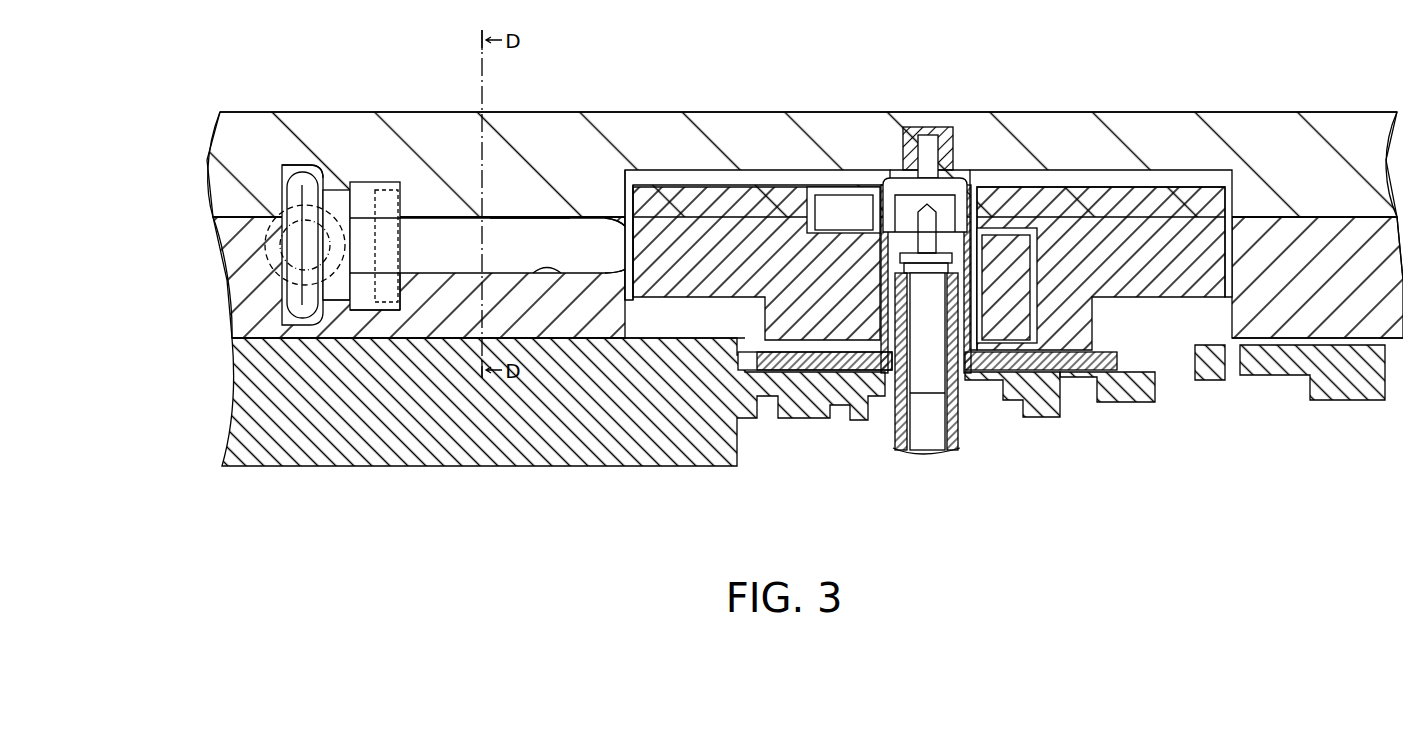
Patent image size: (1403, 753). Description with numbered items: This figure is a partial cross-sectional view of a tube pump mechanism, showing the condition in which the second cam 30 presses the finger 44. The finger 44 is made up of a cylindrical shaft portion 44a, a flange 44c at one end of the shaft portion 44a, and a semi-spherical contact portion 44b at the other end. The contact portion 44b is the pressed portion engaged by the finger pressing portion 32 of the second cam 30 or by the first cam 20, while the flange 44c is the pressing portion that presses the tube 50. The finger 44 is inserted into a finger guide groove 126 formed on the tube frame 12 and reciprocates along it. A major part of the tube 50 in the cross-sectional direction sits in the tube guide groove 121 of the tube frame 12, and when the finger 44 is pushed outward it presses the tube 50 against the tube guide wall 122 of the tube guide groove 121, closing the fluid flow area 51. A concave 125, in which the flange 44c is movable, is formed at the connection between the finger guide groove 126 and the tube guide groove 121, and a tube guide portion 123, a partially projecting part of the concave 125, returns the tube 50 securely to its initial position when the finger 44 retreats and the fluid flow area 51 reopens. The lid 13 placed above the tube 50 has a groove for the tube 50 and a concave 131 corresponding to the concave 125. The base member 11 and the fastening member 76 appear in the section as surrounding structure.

The base member 11 is at (243, 390).
The tube frame 12 is at (230, 305).
The lid 13 is at (222, 175).
The first cam 20 is at (1080, 200).
The second cam 30 is at (737, 200).
The finger pressing portion 32 is at (628, 195).
The finger 44 is at (465, 235).
The shaft portion 44a is at (520, 218).
The contact portion 44b is at (602, 232).
The flange 44c is at (337, 188).
The tube 50 is at (302, 188).
The fluid flow area 51 is at (402, 247).
The fastening member 76 is at (967, 195).
The tube guide groove 121 is at (352, 300).
The tube guide wall 122 is at (285, 185).
The tube guide portion 123 is at (372, 302).
The concave 125 is at (395, 312).
The finger guide groove 126 is at (547, 265).
The concave 131 is at (362, 182).